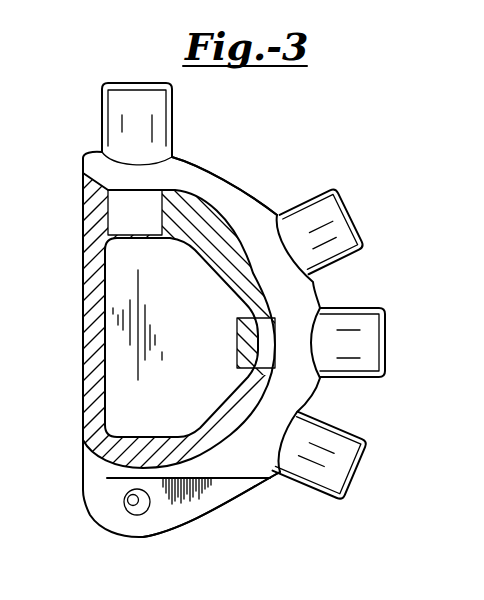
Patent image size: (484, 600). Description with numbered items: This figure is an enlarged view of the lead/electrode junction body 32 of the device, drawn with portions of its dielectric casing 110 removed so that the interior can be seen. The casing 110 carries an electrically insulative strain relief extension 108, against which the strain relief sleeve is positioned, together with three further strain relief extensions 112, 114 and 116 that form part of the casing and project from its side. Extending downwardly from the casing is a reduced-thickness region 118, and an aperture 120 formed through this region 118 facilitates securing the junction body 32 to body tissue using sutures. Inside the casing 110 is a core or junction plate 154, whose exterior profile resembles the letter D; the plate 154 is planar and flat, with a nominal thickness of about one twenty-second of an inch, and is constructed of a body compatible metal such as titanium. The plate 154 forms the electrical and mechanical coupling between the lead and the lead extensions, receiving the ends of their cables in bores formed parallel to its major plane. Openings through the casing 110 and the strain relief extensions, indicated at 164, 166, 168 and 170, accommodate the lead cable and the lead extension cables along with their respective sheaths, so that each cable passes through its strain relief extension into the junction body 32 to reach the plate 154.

The junction body 32 is at (324, 164).
The strain relief extension 108 is at (101, 127).
The dielectric casing 110 is at (240, 193).
The strain relief extension 112 is at (348, 257).
The strain relief extension 114 is at (373, 380).
The strain relief extension 116 is at (327, 499).
The reduced-thickness region 118 is at (204, 520).
The aperture 120 is at (136, 505).
The junction plate 154 is at (197, 339).
The opening 164 is at (152, 213).
The opening 166 is at (245, 305).
The opening 168 is at (248, 357).
The opening 170 is at (221, 422).